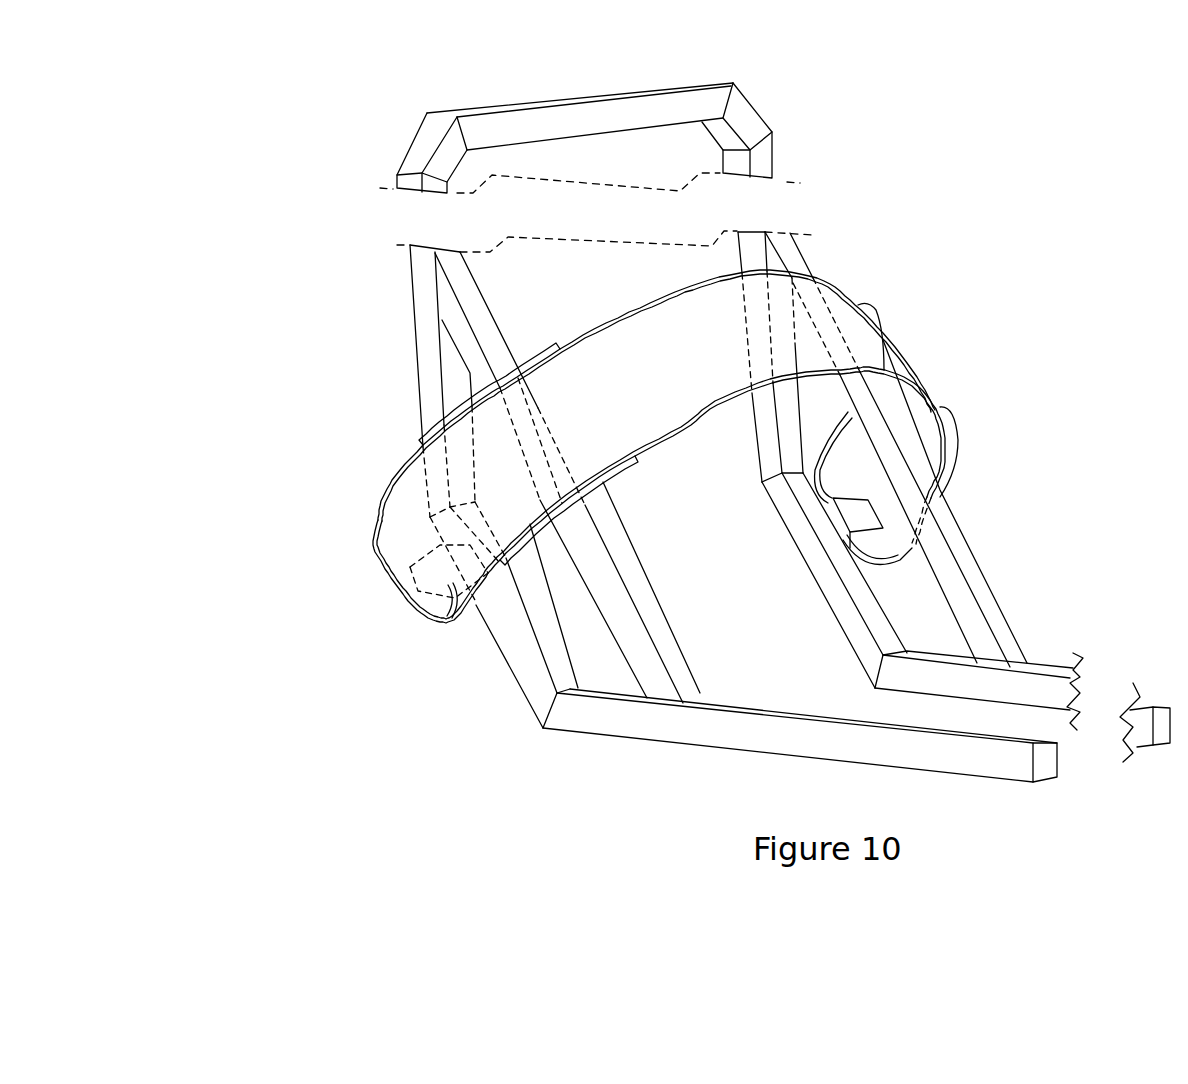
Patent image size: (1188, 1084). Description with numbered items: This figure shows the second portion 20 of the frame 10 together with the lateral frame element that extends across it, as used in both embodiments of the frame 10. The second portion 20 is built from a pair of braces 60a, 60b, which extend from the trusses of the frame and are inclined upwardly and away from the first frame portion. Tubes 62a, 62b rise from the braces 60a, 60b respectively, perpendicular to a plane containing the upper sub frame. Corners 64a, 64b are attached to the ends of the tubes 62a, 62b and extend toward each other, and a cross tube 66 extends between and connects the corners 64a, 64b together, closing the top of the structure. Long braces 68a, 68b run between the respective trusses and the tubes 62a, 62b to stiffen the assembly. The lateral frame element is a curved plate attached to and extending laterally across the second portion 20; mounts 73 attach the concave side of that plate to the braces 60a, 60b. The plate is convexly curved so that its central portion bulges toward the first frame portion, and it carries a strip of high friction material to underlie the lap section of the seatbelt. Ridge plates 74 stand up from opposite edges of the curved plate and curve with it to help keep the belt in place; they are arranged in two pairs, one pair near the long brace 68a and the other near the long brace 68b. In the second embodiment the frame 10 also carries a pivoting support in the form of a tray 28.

The frame 10 is at (897, 180).
The second portion 20 is at (396, 128).
The tray 28 is at (845, 294).
The brace 60a is at (532, 682).
The brace 60b is at (887, 613).
The tube 62a is at (413, 283).
The tube 62b is at (773, 155).
The corner 64a is at (405, 165).
The corner 64b is at (758, 110).
The cross tube 66 is at (578, 95).
The long brace 68a is at (480, 335).
The long brace 68b is at (955, 517).
The mount 73 is at (858, 513).
The ridge plate 74 is at (437, 433).